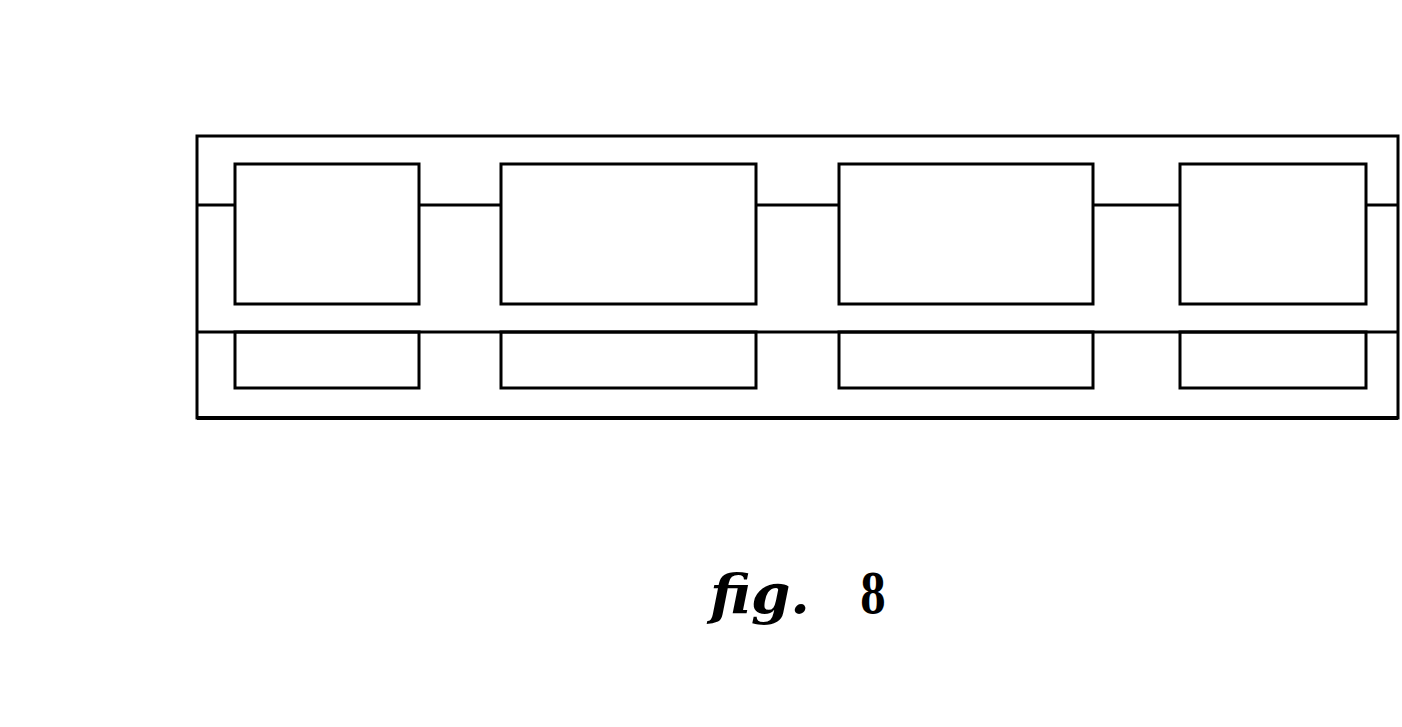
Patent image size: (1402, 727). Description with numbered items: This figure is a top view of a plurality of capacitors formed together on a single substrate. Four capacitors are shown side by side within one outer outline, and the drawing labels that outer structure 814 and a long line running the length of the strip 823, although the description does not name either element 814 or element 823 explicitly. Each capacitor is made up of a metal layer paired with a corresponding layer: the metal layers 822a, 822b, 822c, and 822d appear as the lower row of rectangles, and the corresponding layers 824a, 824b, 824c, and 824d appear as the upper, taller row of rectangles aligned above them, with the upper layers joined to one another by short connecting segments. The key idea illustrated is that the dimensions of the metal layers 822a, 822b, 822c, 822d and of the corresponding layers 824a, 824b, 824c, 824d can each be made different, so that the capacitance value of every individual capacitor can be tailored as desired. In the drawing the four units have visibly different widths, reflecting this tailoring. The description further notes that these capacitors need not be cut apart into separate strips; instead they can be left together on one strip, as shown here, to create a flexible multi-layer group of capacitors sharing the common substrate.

The substrate 814 is at (210, 178).
The conductor line 823 is at (217, 283).
The corresponding layer 824a is at (293, 185).
The corresponding layer 824b is at (628, 185).
The corresponding layer 824c is at (978, 185).
The corresponding layer 824d is at (1265, 185).
The metal layer 822a is at (287, 368).
The metal layer 822b is at (552, 367).
The metal layer 822c is at (975, 366).
The metal layer 822d is at (1235, 368).